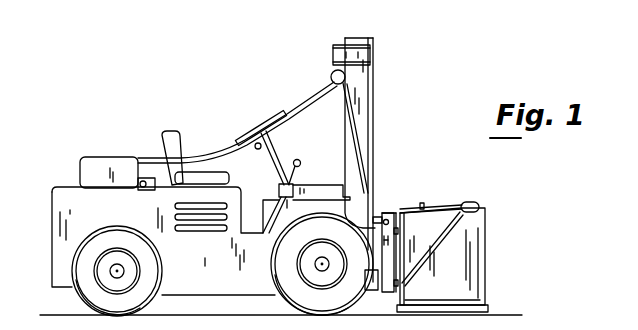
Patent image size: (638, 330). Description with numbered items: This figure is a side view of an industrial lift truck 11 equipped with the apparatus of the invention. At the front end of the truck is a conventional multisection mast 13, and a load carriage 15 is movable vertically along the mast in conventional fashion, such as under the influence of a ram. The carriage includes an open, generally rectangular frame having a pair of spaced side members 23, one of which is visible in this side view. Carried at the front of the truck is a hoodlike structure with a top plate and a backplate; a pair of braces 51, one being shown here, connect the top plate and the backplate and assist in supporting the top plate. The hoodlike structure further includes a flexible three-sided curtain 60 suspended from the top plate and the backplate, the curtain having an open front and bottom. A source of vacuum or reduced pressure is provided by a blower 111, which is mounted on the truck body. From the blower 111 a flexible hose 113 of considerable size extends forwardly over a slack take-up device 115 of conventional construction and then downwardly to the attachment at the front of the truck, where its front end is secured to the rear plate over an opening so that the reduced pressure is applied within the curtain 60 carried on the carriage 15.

The industrial lift truck 11 is at (71, 193).
The blower 111 is at (103, 165).
The flexible hose 113 is at (200, 157).
The slack take-up device 115 is at (332, 74).
The multisection mast 13 is at (363, 105).
The load carriage 15 is at (392, 211).
The side member 23 is at (386, 259).
The brace 51 is at (441, 233).
The three-sided curtain 60 is at (463, 295).